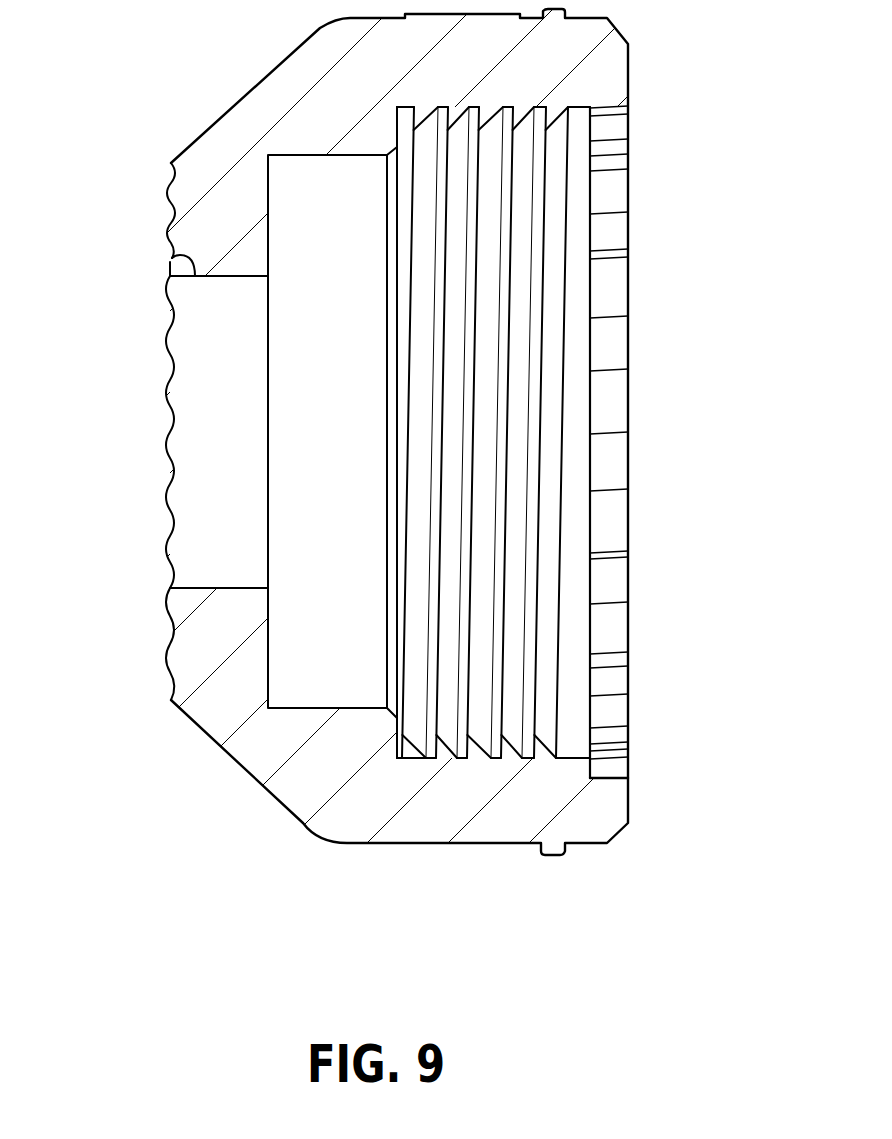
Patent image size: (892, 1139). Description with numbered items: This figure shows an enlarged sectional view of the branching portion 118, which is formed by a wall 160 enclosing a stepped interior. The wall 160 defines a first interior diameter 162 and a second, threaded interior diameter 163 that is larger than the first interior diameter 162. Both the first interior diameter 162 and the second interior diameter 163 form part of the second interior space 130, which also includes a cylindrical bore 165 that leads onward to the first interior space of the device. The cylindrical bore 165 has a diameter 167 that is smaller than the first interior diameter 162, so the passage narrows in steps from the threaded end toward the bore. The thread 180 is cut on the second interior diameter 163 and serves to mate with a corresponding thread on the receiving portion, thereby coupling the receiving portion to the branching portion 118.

The branching portion 118 is at (152, 66).
The second interior space 130 is at (197, 352).
The wall 160 is at (275, 742).
The first interior diameter 162 is at (368, 170).
The second, threaded interior diameter 163 is at (638, 107).
The cylindrical bore 165 is at (172, 258).
The diameter 167 is at (250, 292).
The thread 180 is at (483, 752).